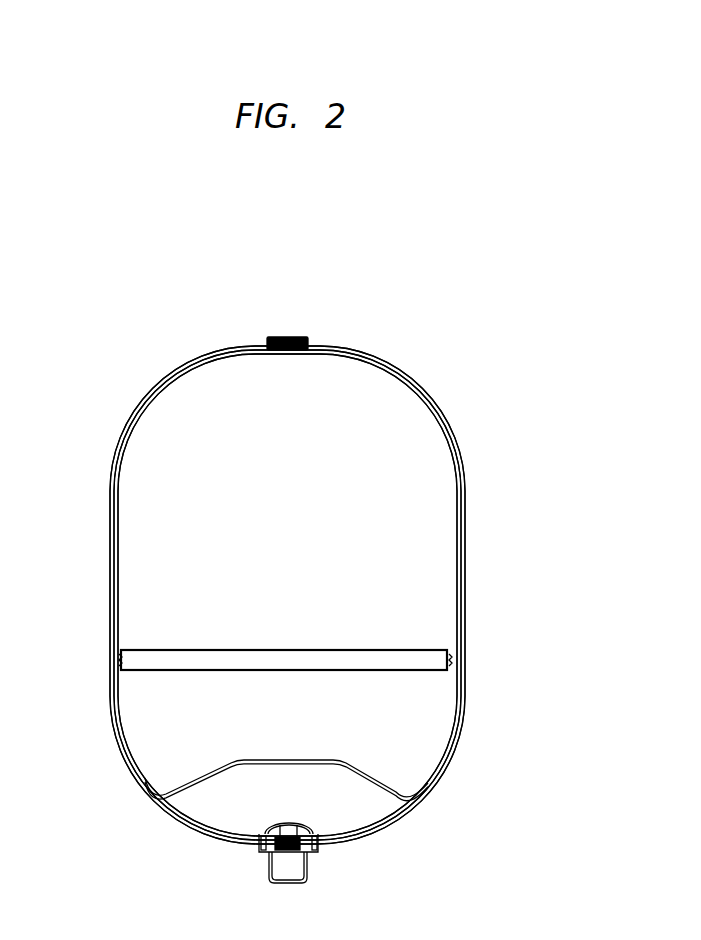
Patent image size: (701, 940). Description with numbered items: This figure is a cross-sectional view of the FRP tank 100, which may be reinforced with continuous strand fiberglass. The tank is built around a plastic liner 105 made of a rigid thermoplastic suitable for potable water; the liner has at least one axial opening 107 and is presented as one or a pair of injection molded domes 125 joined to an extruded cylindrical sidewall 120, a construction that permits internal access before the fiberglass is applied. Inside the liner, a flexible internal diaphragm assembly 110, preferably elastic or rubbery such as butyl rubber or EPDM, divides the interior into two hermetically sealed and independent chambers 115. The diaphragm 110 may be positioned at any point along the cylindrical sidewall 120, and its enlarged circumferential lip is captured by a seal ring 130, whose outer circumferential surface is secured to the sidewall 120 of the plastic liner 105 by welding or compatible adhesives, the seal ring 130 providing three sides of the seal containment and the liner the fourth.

The FRP tank 100 is at (591, 362).
The plastic liner 105 is at (465, 503).
The axial opening 107 is at (303, 336).
The flexible internal diaphragm assembly 110 is at (385, 795).
The chambers 115 is at (142, 498).
The cylindrical sidewall 120 is at (465, 552).
The injection molded domes 125 is at (164, 374).
The seal ring 130 is at (427, 657).